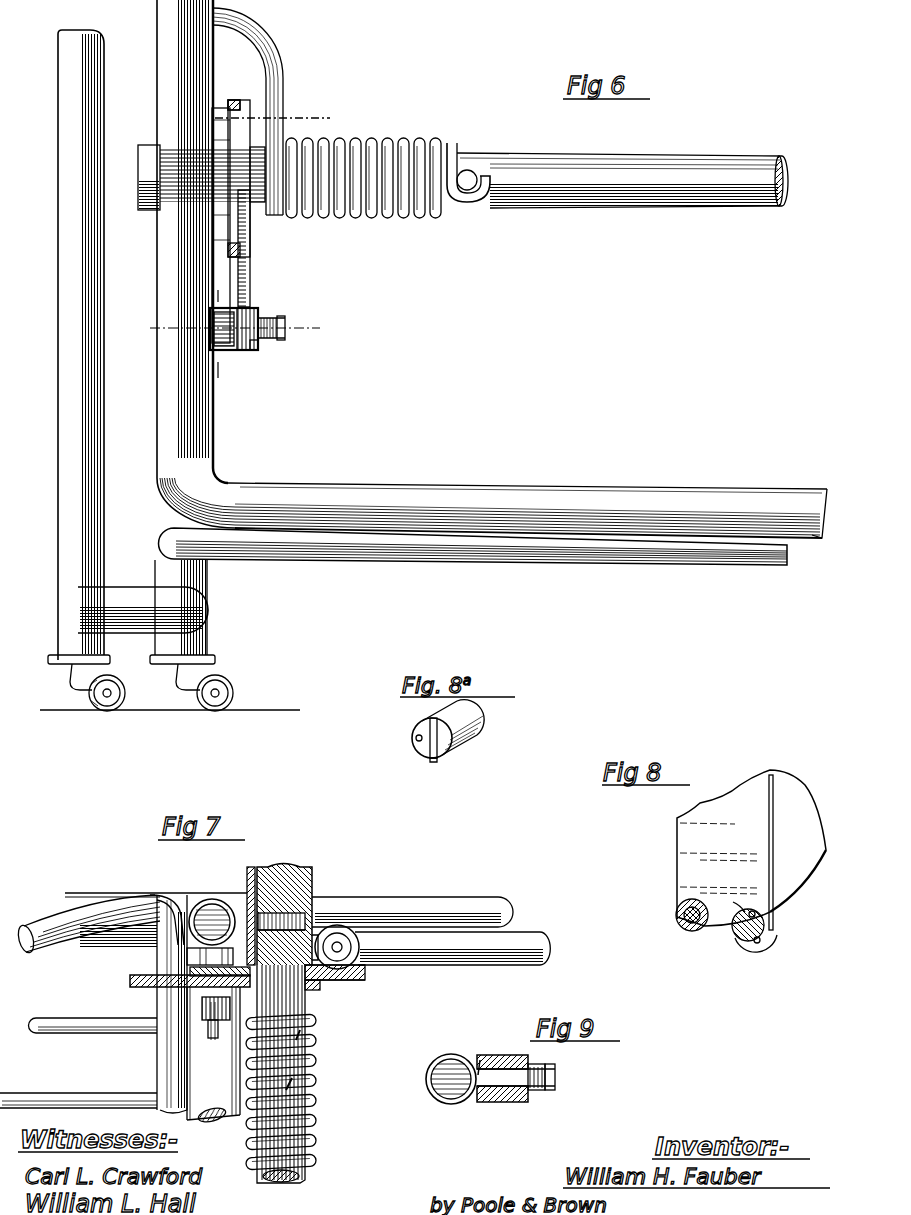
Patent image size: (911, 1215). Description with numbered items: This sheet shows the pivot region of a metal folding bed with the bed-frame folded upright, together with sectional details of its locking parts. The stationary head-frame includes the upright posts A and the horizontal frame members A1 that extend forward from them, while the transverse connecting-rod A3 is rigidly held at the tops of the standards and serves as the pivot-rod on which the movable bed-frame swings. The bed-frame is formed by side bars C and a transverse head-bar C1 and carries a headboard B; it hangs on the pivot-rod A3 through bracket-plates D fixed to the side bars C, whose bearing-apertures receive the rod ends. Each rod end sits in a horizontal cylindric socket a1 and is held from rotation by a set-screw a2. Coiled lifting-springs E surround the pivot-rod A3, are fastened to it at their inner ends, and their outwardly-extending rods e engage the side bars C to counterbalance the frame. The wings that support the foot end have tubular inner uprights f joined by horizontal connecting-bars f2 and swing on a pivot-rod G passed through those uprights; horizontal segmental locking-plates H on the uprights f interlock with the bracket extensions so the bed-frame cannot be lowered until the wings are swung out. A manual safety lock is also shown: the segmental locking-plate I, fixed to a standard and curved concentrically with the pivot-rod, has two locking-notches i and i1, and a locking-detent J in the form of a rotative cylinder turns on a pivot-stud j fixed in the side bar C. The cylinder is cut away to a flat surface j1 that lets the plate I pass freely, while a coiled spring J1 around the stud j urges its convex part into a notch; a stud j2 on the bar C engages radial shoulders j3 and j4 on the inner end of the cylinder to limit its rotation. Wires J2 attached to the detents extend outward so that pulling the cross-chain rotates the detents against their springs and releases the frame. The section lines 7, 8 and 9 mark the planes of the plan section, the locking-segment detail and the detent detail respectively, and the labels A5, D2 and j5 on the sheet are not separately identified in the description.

In FIG. 6, the upright post A is at (102, 421).
In FIG. 6, the horizontal frame member A1 is at (244, 578).
In FIG. 7, the horizontal frame member A1 is at (183, 891).
In FIG. 6, the pivot-rod A3 is at (617, 175).
In FIG. 7, the vertical post A5 is at (281, 1074).
In FIG. 6, the headboard B is at (478, 562).
In FIG. 7, the headboard B is at (78, 1063).
In FIG. 6, the side bar C is at (175, 79).
In FIG. 7, the side bar C is at (216, 900).
In FIG. 9, the side bar C is at (440, 1106).
In FIG. 6, the head-bar C1 is at (527, 510).
In FIG. 7, the head-bar C1 is at (207, 1122).
In FIG. 6, the bracket-plate D is at (236, 225).
In FIG. 7, the bracket-plate D is at (205, 968).
In FIG. 7, the bracket plate D2 is at (352, 985).
In FIG. 6, the lifting-spring E is at (378, 222).
In FIG. 7, the lifting-spring E is at (322, 1083).
In FIG. 7, the pivot-rod G is at (330, 982).
In FIG. 7, the segmental locking-plate H is at (365, 964).
In FIG. 6, the segmental locking-plate I is at (250, 283).
In FIG. 7, the segmental locking-plate I is at (138, 988).
In FIG. 8, the segmental locking-plate I is at (751, 848).
In FIG. 6, the locking-detent J is at (238, 352).
In FIG. 7, the locking-detent J is at (198, 956).
In FIG. 8A, the locking-detent J is at (466, 748).
In FIG. 8, the locking-detent J is at (779, 948).
In FIG. 9, the locking-detent J is at (500, 1106).
In FIG. 7, the spring J1 is at (200, 1008).
In FIG. 9, the spring J1 is at (540, 1092).
In FIG. 6, the wire J2 is at (210, 263).
In FIG. 7, the wire J2 is at (155, 902).
In FIG. 8, the wire J2 is at (775, 845).
In FIG. 9, the wire J2 is at (480, 1058).
In FIG. 6, the socket a1 is at (151, 146).
In FIG. 7, the socket a1 is at (313, 886).
In FIG. 7, the set-screw a2 is at (308, 920).
In FIG. 6, the rod e is at (283, 77).
In FIG. 7, the inner upright f is at (373, 955).
In FIG. 7, the connecting-bar f2 is at (530, 967).
In FIG. 6, the locking-notch i is at (240, 108).
In FIG. 8, the locking-notch i1 is at (752, 910).
In FIG. 6, the pivot-stud j is at (286, 330).
In FIG. 7, the pivot-stud j is at (211, 1038).
In FIG. 8, the pivot-stud j is at (732, 940).
In FIG. 9, the pivot-stud j is at (557, 1080).
In FIG. 6, the flat surface j1 is at (260, 347).
In FIG. 8, the stud j2 is at (750, 942).
In FIG. 8A, the radial shoulder j3 is at (431, 722).
In FIG. 8A, the radial shoulder j4 is at (433, 762).
In FIG. 8, the radial shoulder j4 is at (772, 912).
In FIG. 8, the notch j5 is at (745, 912).
In FIG. 6, the section line 7 is at (124, 179).
In FIG. 6, the section line 8 is at (215, 333).
In FIG. 6, the section line 9 is at (231, 332).